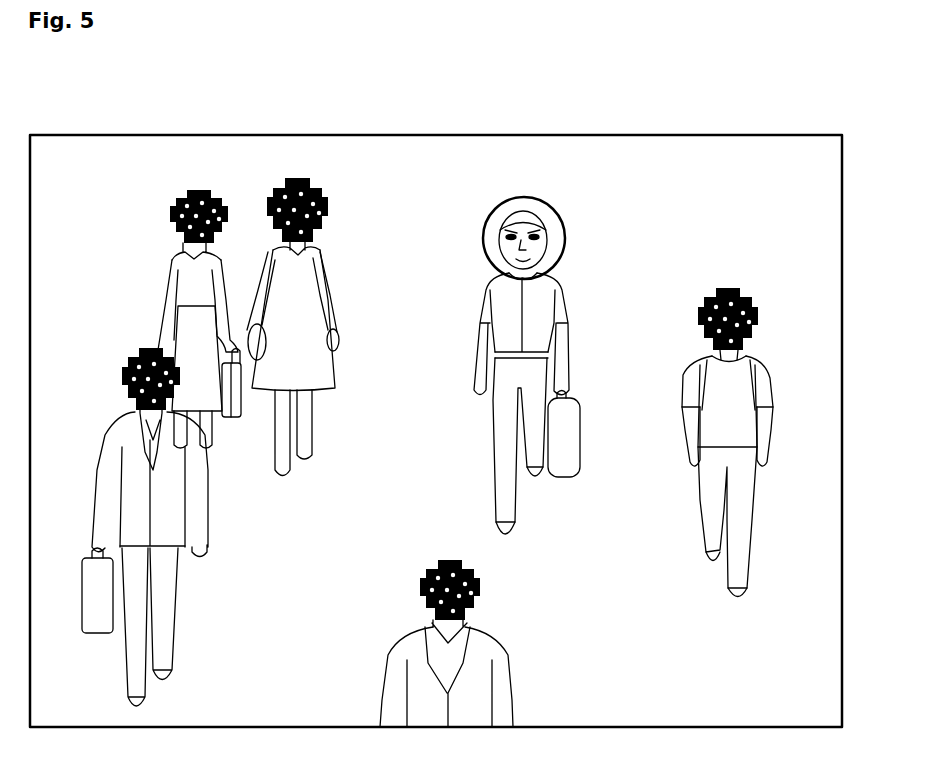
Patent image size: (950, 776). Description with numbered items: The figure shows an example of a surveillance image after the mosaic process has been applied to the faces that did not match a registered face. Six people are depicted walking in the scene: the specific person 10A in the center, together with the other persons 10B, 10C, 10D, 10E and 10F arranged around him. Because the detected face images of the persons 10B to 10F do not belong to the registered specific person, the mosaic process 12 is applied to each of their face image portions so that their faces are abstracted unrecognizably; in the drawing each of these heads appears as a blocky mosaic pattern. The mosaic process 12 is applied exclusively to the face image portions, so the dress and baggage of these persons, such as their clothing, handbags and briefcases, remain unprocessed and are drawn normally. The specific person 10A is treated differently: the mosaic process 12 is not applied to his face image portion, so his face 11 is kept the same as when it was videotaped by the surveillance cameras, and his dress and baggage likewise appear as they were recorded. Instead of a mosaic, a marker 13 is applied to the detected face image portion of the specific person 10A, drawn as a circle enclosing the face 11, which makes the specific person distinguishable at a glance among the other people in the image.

The specific person 10A is at (556, 347).
The person 10B is at (770, 373).
The person 10C is at (515, 653).
The person 10D is at (327, 272).
The person 10E is at (172, 265).
The person 10F is at (208, 521).
The face 11 is at (538, 240).
The mosaic process 12 is at (175, 203).
The marker 13 is at (538, 198).